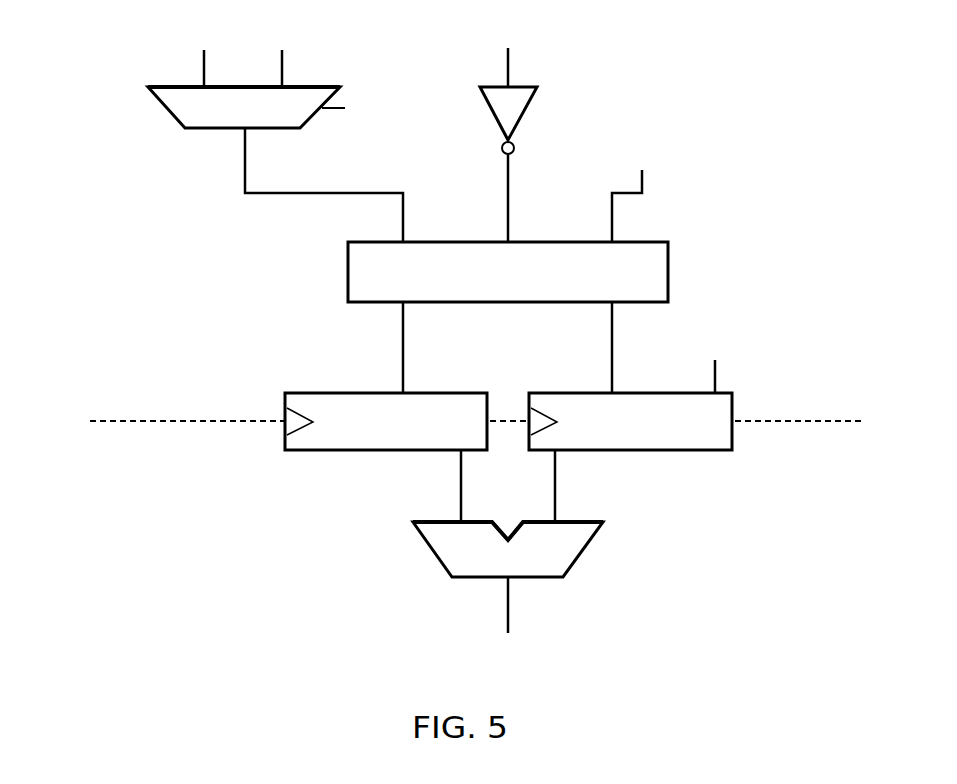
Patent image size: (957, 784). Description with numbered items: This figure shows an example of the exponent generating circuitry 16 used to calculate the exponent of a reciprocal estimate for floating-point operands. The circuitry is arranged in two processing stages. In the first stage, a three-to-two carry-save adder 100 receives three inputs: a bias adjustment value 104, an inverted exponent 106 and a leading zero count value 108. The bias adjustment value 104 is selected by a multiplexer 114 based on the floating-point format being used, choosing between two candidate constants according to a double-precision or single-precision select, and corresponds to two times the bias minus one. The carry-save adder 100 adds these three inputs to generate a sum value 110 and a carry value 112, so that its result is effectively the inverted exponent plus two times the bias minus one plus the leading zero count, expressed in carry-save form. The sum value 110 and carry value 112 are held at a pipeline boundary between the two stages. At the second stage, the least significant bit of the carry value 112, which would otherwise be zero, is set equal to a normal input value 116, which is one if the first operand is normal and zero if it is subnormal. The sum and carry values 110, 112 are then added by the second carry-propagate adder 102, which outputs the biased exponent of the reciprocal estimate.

The exponent generating circuitry 16 is at (111, 487).
The 3:2 carry-save adder 100 is at (348, 275).
The second carry-propagate adder 102 is at (427, 547).
The bias adjustment value 104 is at (262, 194).
The inverted exponent 106 is at (510, 207).
The leading zero count value 108 is at (612, 218).
The sum value 110 is at (332, 452).
The carry value 112 is at (695, 452).
The multiplexer 114 is at (165, 107).
The normal input value 116 is at (716, 372).